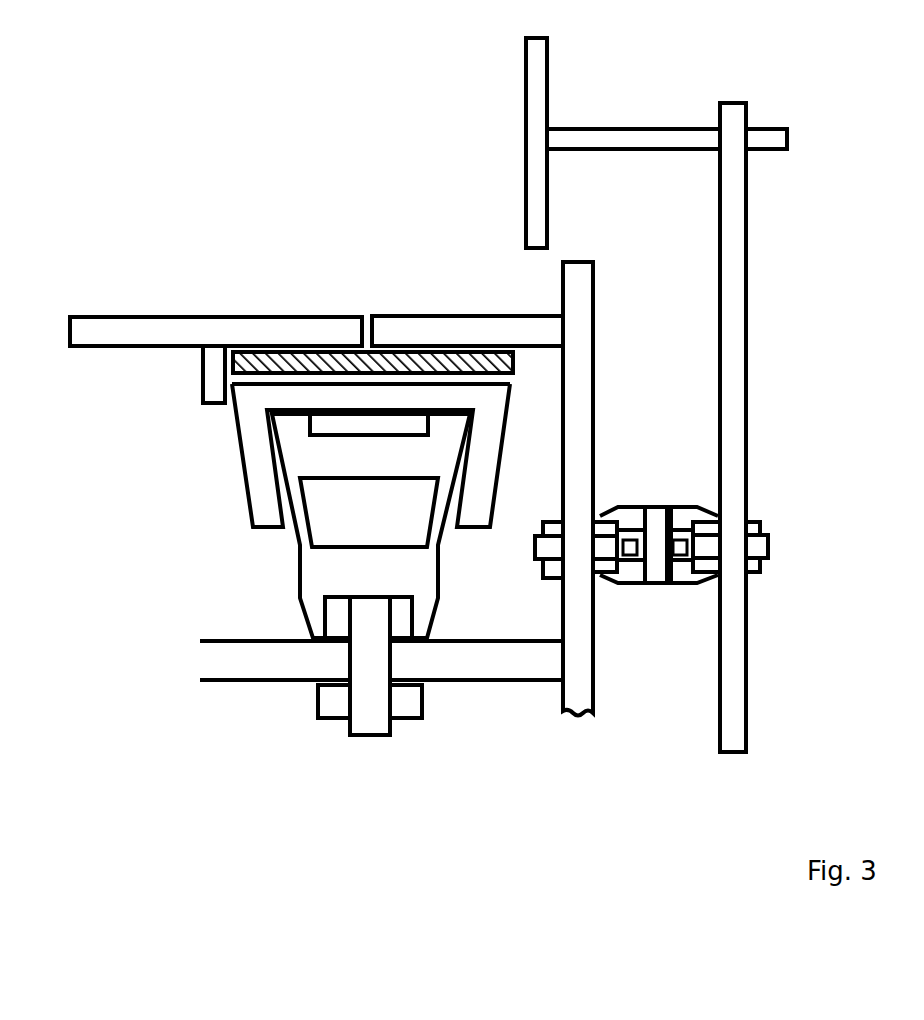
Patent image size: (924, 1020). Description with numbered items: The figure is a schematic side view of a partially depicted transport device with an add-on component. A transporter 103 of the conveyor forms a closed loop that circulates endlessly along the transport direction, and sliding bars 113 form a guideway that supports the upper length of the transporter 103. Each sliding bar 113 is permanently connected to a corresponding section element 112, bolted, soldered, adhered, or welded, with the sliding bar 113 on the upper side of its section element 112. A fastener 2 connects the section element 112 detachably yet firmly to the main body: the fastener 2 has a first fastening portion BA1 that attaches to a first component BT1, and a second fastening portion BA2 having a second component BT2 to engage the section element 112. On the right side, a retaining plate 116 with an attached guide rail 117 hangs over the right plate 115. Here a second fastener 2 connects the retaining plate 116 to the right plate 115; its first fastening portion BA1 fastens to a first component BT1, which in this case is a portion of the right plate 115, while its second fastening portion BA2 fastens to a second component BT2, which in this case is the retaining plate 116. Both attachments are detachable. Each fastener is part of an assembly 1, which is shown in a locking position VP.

The assembly 1 is at (480, 621).
The fastener 2 is at (323, 585).
The transporter 103 is at (173, 303).
The section element 112 is at (400, 395).
The sliding bar 113 is at (295, 362).
The right plate 115 is at (585, 308).
The retaining plate 116 is at (730, 253).
The guide rail 117 is at (560, 103).
The first fastening portion BA1 is at (287, 703).
The second fastening portion BA2 is at (223, 472).
The first component BT1 is at (638, 489).
The second component BT2 is at (570, 427).
The locking position VP is at (410, 755).